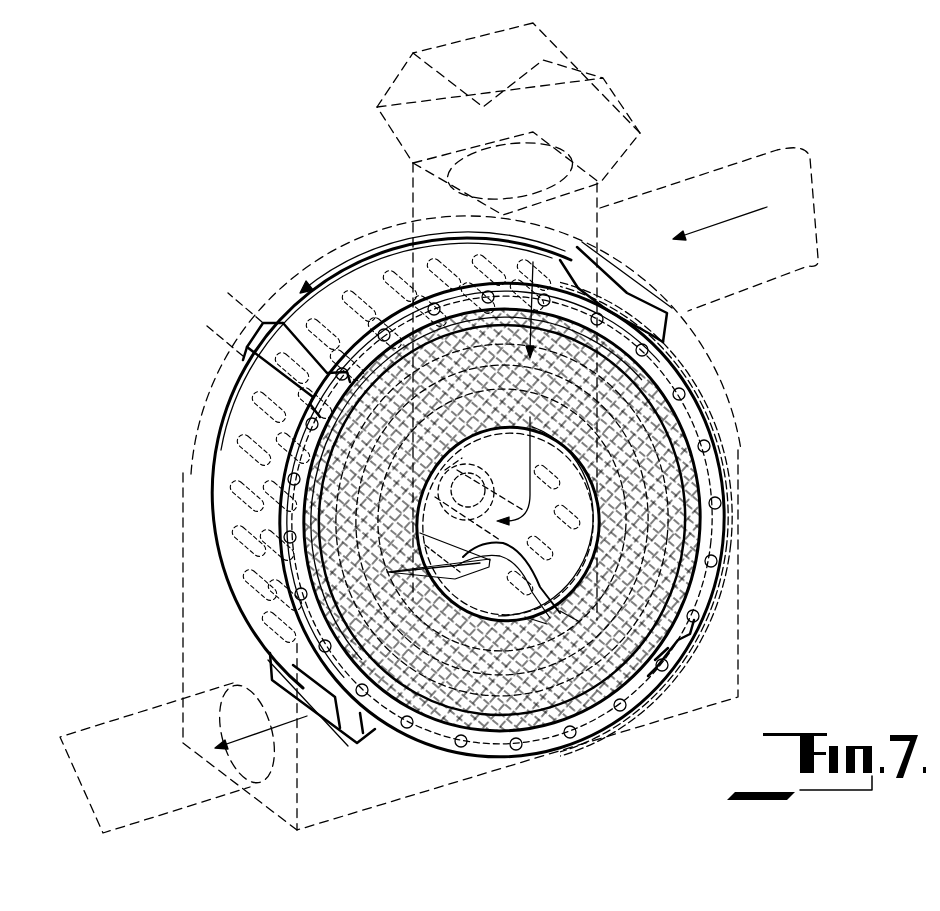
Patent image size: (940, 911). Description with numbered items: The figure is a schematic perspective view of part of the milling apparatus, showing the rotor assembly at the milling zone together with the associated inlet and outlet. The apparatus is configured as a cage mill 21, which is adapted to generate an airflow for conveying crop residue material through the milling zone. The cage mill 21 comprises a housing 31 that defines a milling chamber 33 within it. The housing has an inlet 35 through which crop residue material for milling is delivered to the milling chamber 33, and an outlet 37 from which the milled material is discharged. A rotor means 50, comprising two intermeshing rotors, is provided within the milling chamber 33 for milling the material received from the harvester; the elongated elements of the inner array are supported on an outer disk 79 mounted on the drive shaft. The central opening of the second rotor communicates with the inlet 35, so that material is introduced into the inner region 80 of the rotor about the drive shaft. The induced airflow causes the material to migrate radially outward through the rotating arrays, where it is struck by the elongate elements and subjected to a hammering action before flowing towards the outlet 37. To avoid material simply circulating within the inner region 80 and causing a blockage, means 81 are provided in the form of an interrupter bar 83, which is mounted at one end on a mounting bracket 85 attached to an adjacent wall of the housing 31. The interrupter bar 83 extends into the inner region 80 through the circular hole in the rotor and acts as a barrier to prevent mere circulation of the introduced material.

The cage mill 21 is at (257, 277).
The housing 31 is at (737, 607).
The milling chamber 33 is at (707, 363).
The inlet 35 is at (770, 270).
The outlet 37 is at (170, 780).
The rotor means 50 is at (687, 487).
The outer disk 79 is at (603, 543).
The inner region 80 is at (585, 610).
The means for preventing circulation 81 is at (573, 620).
The interrupter bar 83 is at (537, 620).
The mounting bracket 85 is at (458, 605).